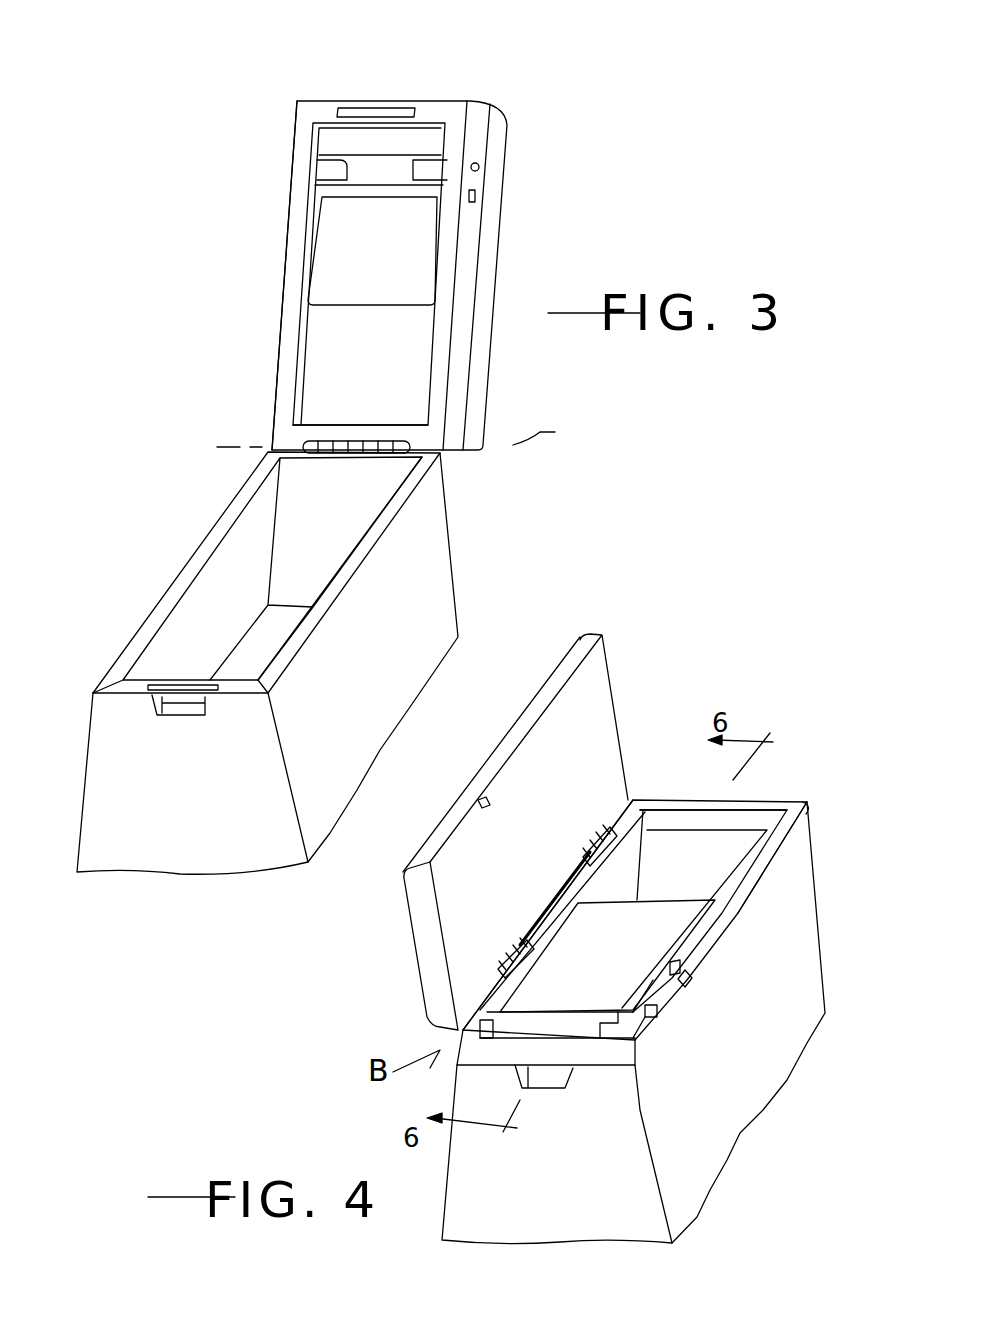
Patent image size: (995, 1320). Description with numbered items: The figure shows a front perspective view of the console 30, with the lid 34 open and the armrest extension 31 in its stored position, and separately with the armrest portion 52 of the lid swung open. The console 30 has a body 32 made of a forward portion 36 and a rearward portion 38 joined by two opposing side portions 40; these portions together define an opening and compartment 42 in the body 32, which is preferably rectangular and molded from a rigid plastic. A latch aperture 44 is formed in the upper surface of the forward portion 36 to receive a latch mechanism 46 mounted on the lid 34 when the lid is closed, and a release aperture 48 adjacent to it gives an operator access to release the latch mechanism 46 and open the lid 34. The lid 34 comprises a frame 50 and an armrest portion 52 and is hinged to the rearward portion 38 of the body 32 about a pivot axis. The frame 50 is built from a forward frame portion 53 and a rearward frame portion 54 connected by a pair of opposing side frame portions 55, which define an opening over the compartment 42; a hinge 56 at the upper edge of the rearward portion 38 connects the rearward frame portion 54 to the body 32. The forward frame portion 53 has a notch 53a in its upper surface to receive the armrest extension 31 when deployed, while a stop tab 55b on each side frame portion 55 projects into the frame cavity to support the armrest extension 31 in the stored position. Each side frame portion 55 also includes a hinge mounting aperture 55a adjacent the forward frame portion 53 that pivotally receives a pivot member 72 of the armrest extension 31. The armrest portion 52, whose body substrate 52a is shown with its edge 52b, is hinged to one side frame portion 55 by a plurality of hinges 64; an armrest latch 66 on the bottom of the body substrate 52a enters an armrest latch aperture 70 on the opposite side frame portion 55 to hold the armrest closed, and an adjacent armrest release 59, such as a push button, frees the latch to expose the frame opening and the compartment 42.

In FIG. 3, the console 30 is at (130, 350).
In FIG. 4, the console 30 is at (745, 677).
In FIG. 3, the armrest extension 31 is at (330, 260).
In FIG. 4, the armrest extension 31 is at (620, 960).
In FIG. 3, the body 32 is at (363, 725).
In FIG. 4, the body 32 is at (545, 1217).
In FIG. 3, the lid 34 is at (332, 90).
In FIG. 3, the forward portion 36 is at (168, 828).
In FIG. 3, the rearward portion 38 is at (252, 550).
In FIG. 3, the side portions 40 is at (138, 647).
In FIG. 3, the opening and compartment 42 is at (187, 625).
In FIG. 4, the opening and compartment 42 is at (655, 847).
In FIG. 3, the latch aperture 44 is at (148, 688).
In FIG. 3, the latch mechanism 46 is at (335, 112).
In FIG. 3, the release aperture 48 is at (177, 713).
In FIG. 4, the release aperture 48 is at (530, 1087).
In FIG. 3, the frame 50 is at (473, 130).
In FIG. 4, the frame 50 is at (783, 843).
In FIG. 3, the armrest portion 52 is at (500, 112).
In FIG. 4, the armrest portion 52 is at (437, 930).
In FIG. 4, the body substrate 52a is at (457, 957).
In FIG. 4, the lid side wall corner 52b is at (428, 850).
In FIG. 3, the forward frame portion 53 is at (315, 108).
In FIG. 4, the forward frame portion 53 is at (477, 1033).
In FIG. 3, the notch 53a is at (380, 101).
In FIG. 4, the notch 53a is at (600, 1038).
In FIG. 3, the rearward frame portion 54 is at (317, 433).
In FIG. 4, the rearward frame portion 54 is at (743, 807).
In FIG. 3, the side frame portions 55 is at (287, 358).
In FIG. 4, the side frame portions 55 is at (628, 810).
In FIG. 4, the hinge mounting aperture 55a is at (655, 1008).
In FIG. 3, the stop tab 55b is at (313, 175).
In FIG. 3, the hinge 56 is at (303, 442).
In FIG. 4, the hinge 56 is at (808, 803).
In FIG. 3, the armrest release 59 is at (477, 200).
In FIG. 4, the armrest release 59 is at (690, 977).
In FIG. 4, the hinges 64 is at (515, 942).
In FIG. 4, the armrest latch 66 is at (490, 792).
In FIG. 4, the armrest latch aperture 70 is at (673, 967).
In FIG. 3, the pivot member 72 is at (323, 168).
In FIG. 4, the pivot member 72 is at (657, 1008).